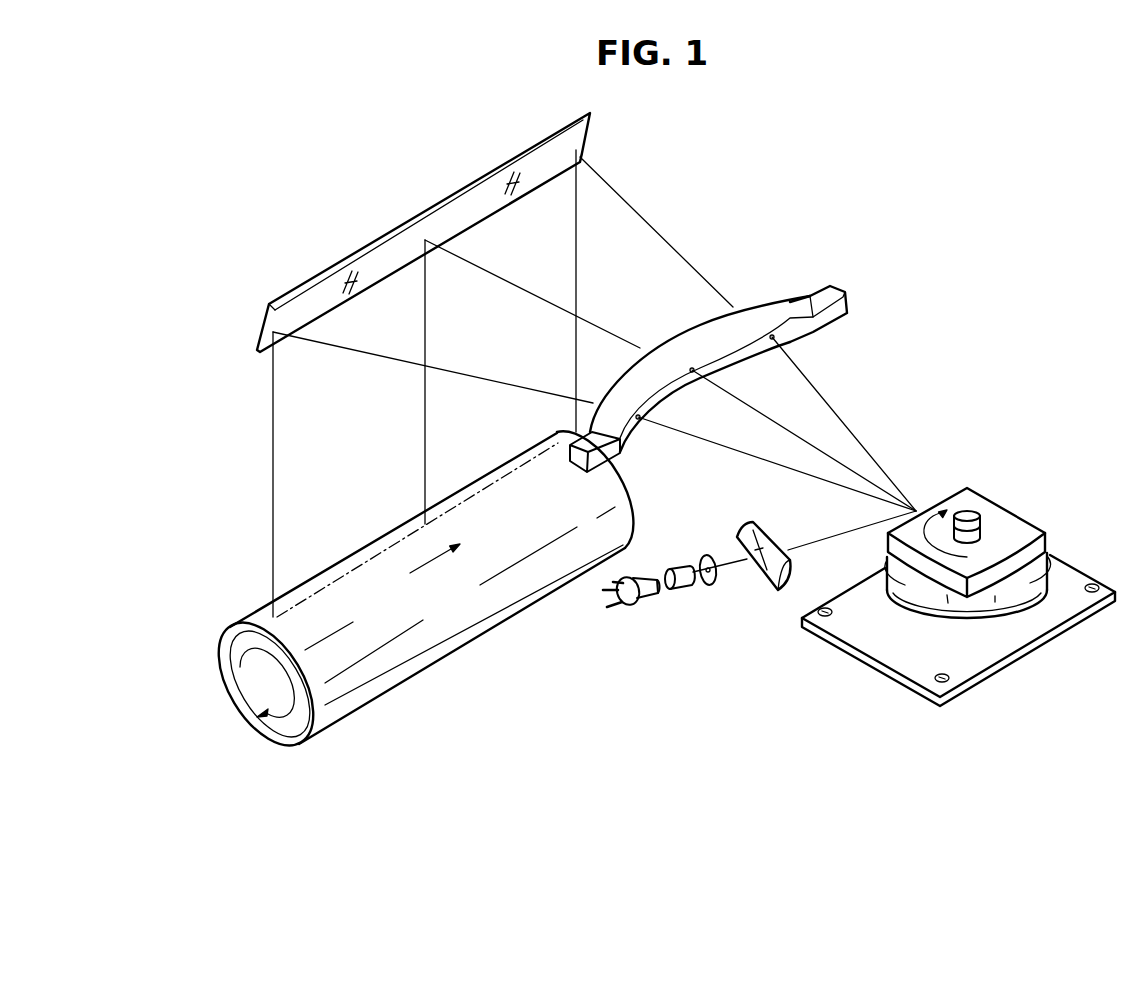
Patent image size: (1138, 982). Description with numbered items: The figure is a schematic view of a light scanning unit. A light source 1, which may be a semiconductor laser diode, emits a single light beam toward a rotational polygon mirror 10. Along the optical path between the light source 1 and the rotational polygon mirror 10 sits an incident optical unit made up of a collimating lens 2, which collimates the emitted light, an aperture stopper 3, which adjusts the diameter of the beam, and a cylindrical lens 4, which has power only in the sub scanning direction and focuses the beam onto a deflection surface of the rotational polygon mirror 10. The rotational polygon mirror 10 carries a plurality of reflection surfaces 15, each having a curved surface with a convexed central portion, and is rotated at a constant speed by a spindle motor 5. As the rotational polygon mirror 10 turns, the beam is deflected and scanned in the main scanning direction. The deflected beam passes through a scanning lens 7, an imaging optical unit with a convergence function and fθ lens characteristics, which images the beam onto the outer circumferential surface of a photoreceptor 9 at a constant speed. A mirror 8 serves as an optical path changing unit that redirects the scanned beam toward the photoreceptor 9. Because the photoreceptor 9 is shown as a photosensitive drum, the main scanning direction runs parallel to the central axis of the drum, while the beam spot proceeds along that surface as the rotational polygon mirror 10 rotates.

The light source 1 is at (633, 610).
The collimating lens 2 is at (677, 593).
The aperture stopper 3 is at (712, 588).
The cylindrical lens 4 is at (777, 592).
The spindle motor 5 is at (1043, 572).
The scanning lens 7 is at (837, 297).
The mirror 8 is at (430, 208).
The photoreceptor 9 is at (383, 535).
The rotational polygon mirror 10 is at (980, 482).
The reflection surfaces 15 is at (1037, 552).